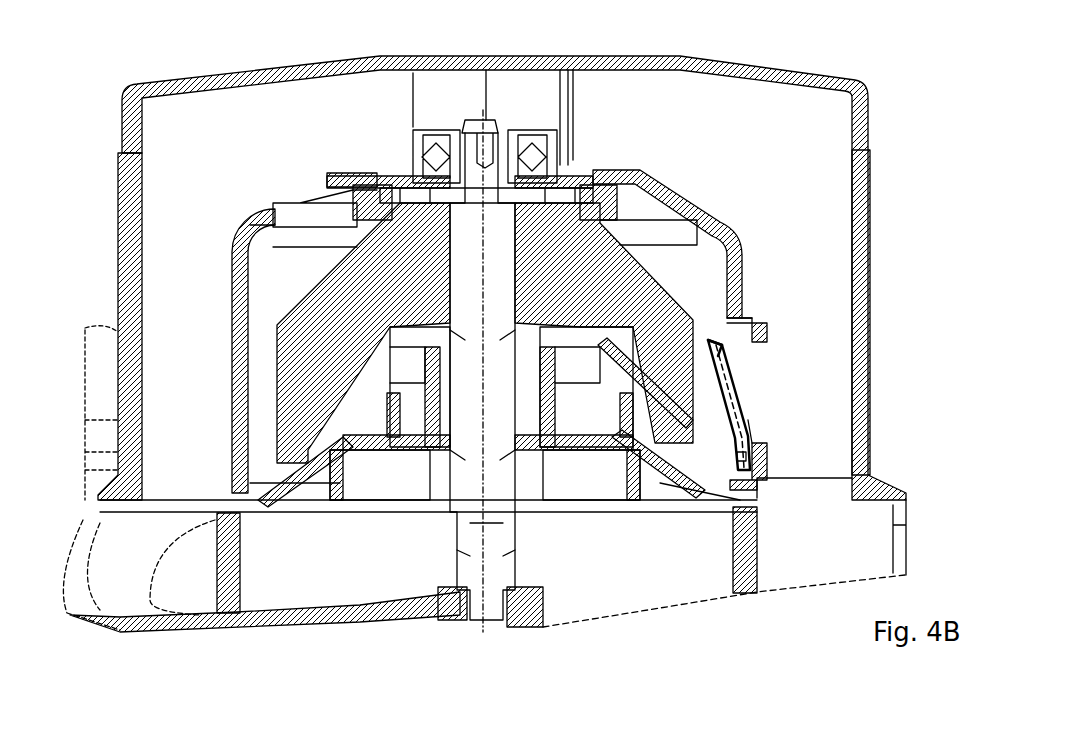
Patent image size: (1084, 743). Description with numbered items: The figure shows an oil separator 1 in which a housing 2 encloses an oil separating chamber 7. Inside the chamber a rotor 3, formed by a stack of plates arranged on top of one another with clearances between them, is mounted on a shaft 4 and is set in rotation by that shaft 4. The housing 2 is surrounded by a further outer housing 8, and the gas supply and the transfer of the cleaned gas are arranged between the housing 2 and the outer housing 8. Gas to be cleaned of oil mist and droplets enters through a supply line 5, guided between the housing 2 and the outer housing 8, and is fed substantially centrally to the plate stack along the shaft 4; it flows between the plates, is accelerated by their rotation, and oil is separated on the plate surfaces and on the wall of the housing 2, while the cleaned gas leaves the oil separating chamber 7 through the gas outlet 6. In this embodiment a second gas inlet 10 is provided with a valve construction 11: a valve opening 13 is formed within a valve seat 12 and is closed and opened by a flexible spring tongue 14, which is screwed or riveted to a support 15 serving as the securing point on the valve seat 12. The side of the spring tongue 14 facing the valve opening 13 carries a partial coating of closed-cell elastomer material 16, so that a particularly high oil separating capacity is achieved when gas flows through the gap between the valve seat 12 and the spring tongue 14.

The oil separator 1 is at (872, 178).
The housing 2 is at (731, 226).
The rotor 3 is at (598, 280).
The shaft 4 is at (487, 279).
The supply line 5 is at (483, 128).
The gas outlet 6 is at (318, 206).
The oil separating chamber 7 is at (292, 289).
The outer housing 8 is at (118, 215).
The second gas inlet 10 is at (756, 362).
The valve construction 11 is at (756, 372).
The valve seat 12 is at (753, 458).
The valve opening 13 is at (753, 416).
The spring tongue 14 is at (736, 388).
The support 15 is at (738, 462).
The closed-cell elastomer material 16 is at (725, 350).